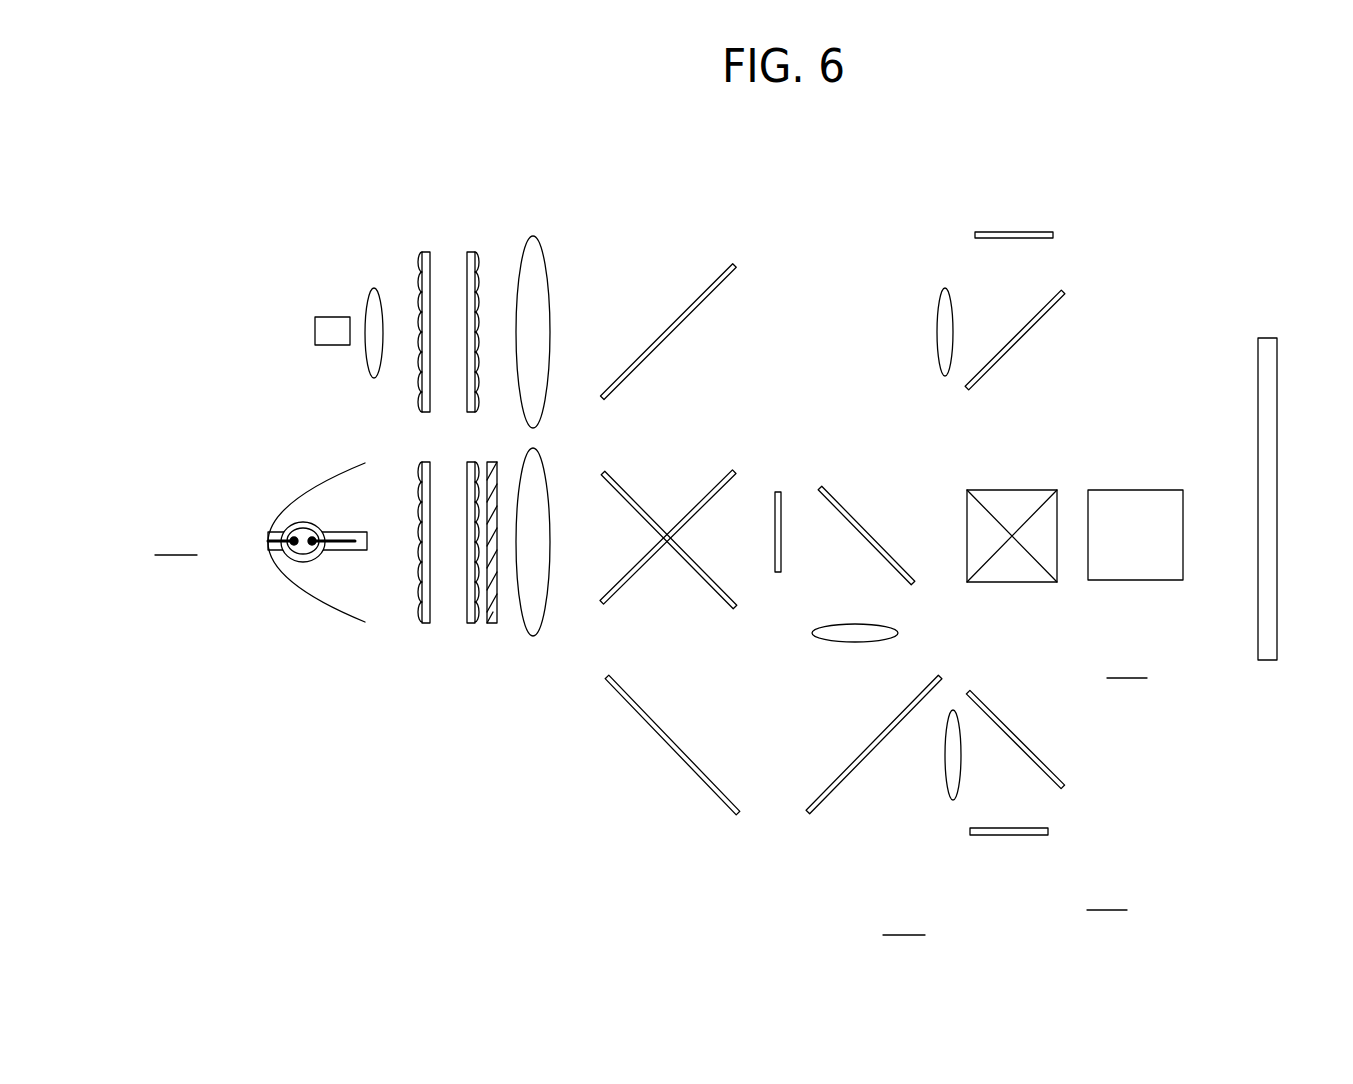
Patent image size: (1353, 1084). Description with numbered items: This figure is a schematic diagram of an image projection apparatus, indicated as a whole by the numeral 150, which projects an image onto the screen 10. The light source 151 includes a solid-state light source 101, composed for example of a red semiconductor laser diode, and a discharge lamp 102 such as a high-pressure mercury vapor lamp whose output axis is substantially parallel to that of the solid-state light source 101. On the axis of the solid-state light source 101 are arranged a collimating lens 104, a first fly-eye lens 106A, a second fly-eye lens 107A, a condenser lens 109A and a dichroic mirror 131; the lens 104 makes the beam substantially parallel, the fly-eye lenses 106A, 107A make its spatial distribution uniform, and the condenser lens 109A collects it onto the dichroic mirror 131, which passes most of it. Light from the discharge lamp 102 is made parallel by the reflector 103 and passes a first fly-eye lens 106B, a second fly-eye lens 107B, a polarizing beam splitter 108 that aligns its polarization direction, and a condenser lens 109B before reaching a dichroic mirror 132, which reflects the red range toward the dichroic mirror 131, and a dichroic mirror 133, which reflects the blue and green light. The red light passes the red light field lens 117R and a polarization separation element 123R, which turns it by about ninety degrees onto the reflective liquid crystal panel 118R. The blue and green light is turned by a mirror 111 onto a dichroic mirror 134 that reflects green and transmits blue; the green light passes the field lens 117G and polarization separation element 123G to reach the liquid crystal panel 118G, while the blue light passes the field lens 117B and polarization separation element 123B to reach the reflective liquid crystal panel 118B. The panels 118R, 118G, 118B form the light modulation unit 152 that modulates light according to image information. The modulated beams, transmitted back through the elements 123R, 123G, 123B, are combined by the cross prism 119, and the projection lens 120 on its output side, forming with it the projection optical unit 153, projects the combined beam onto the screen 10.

The screen 10 is at (1266, 672).
The solid-state light source 101 is at (332, 317).
The discharge lamp 102 is at (340, 548).
The reflector 103 is at (277, 580).
The collimating lens 104 is at (373, 288).
The first fly-eye lens 106A is at (428, 252).
The first fly-eye lens 106B is at (423, 623).
The second fly-eye lens 107A is at (473, 252).
The second fly-eye lens 107B is at (470, 623).
The polarizing beam splitter 108 is at (492, 623).
The condenser lens 109A is at (533, 235).
The condenser lens 109B is at (533, 637).
The mirror 111 is at (689, 752).
The red light field lens 117R is at (935, 318).
The field lens 117G is at (898, 633).
The field lens 117B is at (961, 770).
The reflective liquid crystal panel 118R is at (1025, 232).
The liquid crystal panel 118G is at (782, 545).
The reflective liquid crystal panel 118B is at (1008, 835).
The cross prism 119 is at (1015, 490).
The projection lens 120 is at (1135, 490).
The polarization separation element 123R is at (1028, 328).
The polarization separation element 123G is at (860, 520).
The polarization separation element 123B is at (1018, 732).
The dichroic mirror 131 is at (670, 325).
The dichroic mirror 132 is at (695, 503).
The dichroic mirror 133 is at (697, 575).
The dichroic mirror 134 is at (857, 770).
The optical unit 150 is at (904, 917).
The light source 151 is at (176, 537).
The light modulation unit 152 is at (1062, 813).
The projection optical unit 153 is at (1120, 597).